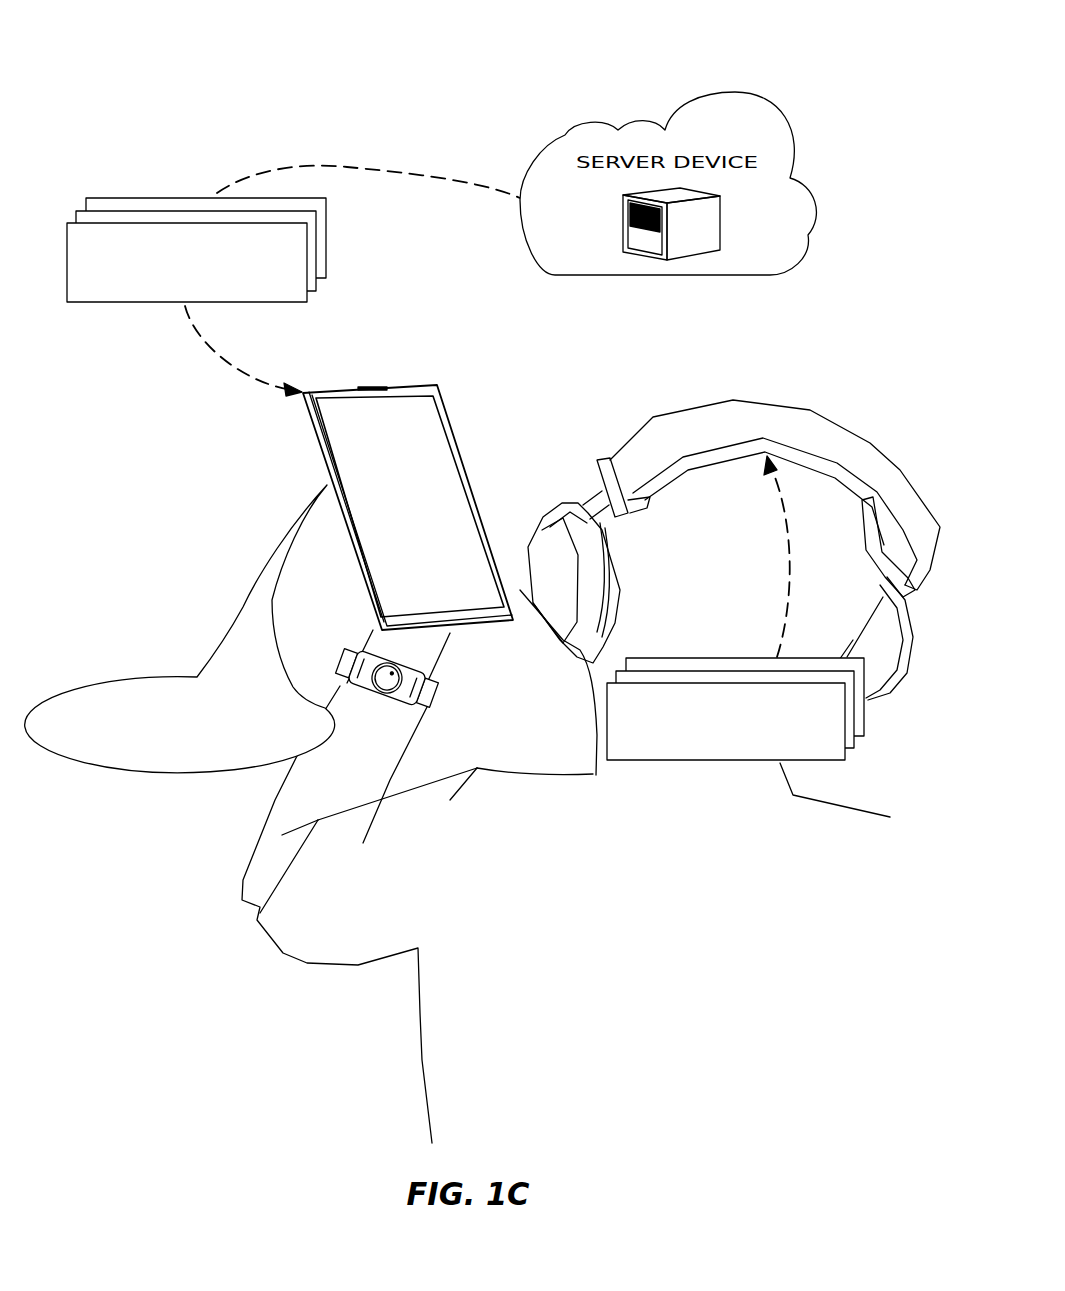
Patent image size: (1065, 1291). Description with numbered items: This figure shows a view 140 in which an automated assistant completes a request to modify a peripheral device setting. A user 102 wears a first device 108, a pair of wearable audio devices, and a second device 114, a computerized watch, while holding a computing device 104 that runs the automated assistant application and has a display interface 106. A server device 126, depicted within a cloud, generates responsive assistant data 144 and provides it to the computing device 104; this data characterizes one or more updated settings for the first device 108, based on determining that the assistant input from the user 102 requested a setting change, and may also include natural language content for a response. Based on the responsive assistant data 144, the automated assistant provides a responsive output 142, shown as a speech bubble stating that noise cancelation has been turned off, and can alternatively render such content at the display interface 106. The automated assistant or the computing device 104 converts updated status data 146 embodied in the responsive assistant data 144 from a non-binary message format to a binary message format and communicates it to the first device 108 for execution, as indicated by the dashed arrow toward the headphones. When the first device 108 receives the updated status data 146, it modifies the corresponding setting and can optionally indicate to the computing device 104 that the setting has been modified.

The view 140 is at (157, 76).
The responsive assistant data 144 is at (174, 293).
The server device 126 is at (682, 240).
The computing device 104 is at (326, 465).
The display interface 106 is at (400, 509).
The user 102 is at (722, 591).
The first device 108 is at (697, 405).
The second device 114 is at (430, 703).
The responsive output 142 is at (124, 677).
The updated status data 146 is at (713, 752).